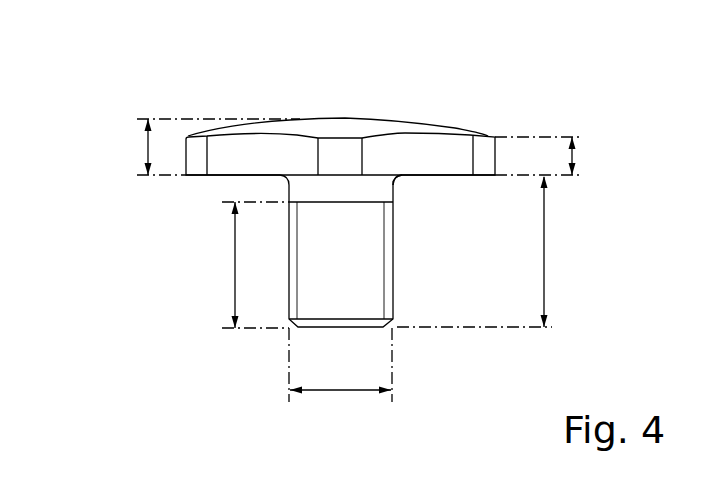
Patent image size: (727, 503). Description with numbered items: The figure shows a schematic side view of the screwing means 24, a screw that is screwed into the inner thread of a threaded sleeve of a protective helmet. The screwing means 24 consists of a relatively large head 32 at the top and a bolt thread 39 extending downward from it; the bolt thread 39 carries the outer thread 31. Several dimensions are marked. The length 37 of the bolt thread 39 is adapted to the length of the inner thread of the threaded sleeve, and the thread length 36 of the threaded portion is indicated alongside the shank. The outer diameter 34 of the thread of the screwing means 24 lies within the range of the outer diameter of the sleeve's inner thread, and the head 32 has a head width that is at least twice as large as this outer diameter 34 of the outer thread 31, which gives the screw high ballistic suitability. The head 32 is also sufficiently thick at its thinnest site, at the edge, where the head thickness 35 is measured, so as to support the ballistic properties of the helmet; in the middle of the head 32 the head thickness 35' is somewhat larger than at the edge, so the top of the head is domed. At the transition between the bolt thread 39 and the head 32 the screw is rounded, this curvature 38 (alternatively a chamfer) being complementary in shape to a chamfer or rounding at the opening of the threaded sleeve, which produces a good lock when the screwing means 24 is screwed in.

The screwing means 24 is at (364, 216).
The outer thread 31 is at (337, 294).
The head 32 is at (418, 148).
The outer diameter 34 is at (340, 390).
The head thickness 35 is at (581, 156).
The head thickness 35' is at (168, 147).
The thread length 36 is at (235, 266).
The length 37 is at (544, 258).
The curvature 38 is at (396, 187).
The bolt thread 39 is at (378, 288).